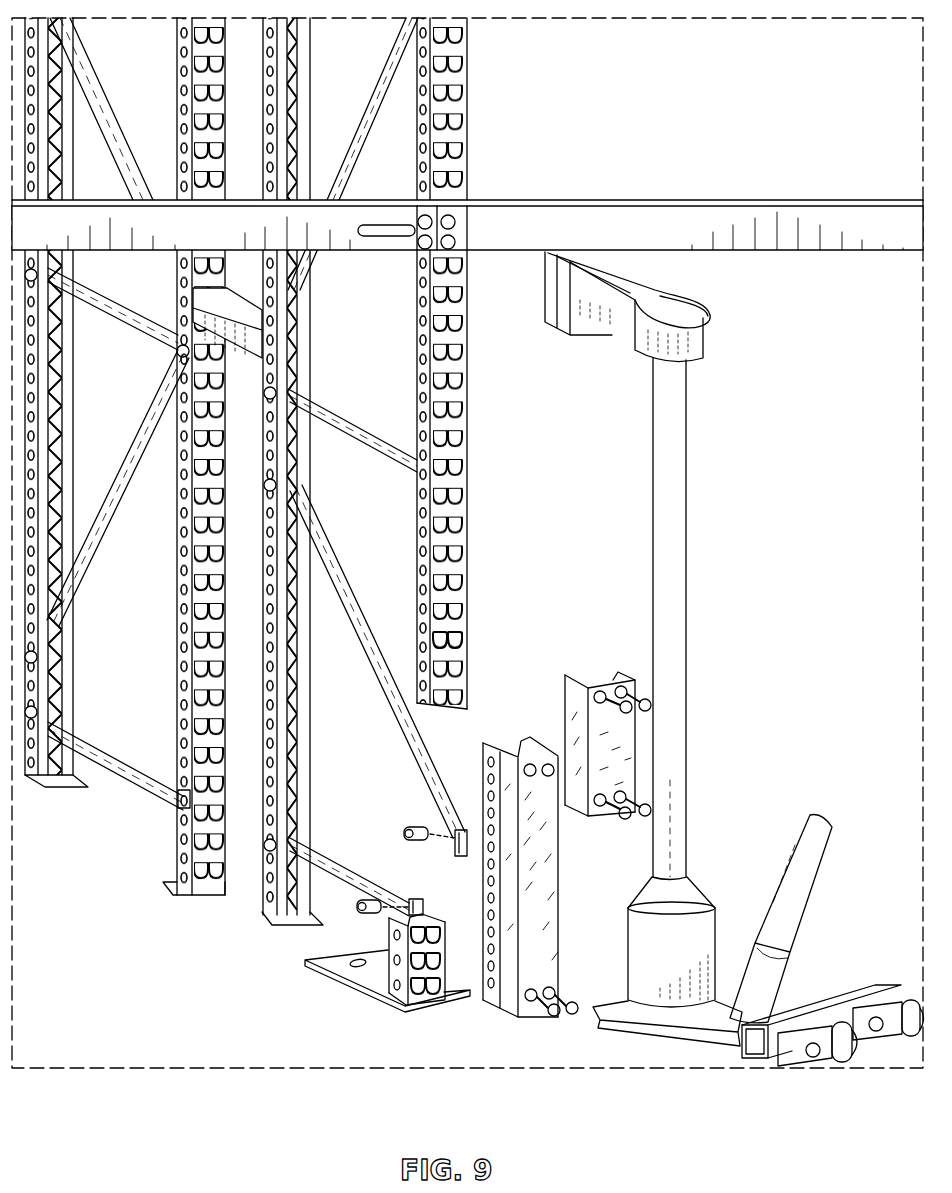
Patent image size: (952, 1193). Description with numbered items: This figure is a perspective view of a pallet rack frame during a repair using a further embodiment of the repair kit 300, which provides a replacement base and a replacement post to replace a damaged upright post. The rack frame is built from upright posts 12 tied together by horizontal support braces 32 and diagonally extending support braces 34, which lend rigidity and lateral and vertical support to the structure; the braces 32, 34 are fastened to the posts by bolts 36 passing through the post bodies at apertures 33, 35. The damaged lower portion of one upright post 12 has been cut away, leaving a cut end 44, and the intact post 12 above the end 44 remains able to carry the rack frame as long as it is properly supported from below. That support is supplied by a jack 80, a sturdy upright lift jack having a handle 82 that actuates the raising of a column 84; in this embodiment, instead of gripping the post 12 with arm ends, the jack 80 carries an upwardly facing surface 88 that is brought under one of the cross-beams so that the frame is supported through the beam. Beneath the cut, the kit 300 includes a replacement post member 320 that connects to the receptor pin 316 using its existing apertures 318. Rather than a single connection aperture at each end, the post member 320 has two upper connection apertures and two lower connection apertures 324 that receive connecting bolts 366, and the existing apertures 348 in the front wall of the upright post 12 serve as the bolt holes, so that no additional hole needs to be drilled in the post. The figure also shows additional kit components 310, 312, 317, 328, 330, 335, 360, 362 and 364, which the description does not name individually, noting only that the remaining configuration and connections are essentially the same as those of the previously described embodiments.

The upright post 12 is at (306, 356).
The horizontal support brace 32 is at (317, 860).
The aperture 33 is at (411, 900).
The diagonally extending support brace 34 is at (323, 551).
The aperture 35 is at (456, 840).
The bolt 36 is at (409, 830).
The cut end 44 is at (441, 710).
The supporting jack 80 is at (704, 659).
The handle 82 is at (805, 878).
The column 84 is at (680, 433).
The upwardly facing surface 88 is at (548, 256).
The repair kit 300 is at (561, 640).
The base assembly 310 is at (346, 1013).
The base plate 312 is at (333, 958).
The receptor pin 316 is at (418, 1013).
The bolt hole 317 is at (400, 965).
The existing aperture 318 is at (418, 990).
The replacement post member 320 is at (531, 904).
The lower connection aperture 324 is at (536, 1014).
The upper fasteners 328 is at (547, 764).
The side flange 330 is at (483, 790).
The flange hole 335 is at (486, 992).
The existing aperture 348 is at (457, 640).
The splice assembly 360 is at (660, 728).
The splice bracket 362 is at (600, 692).
The lower splice fasteners 364 is at (606, 816).
The connecting bolt 366 is at (651, 704).